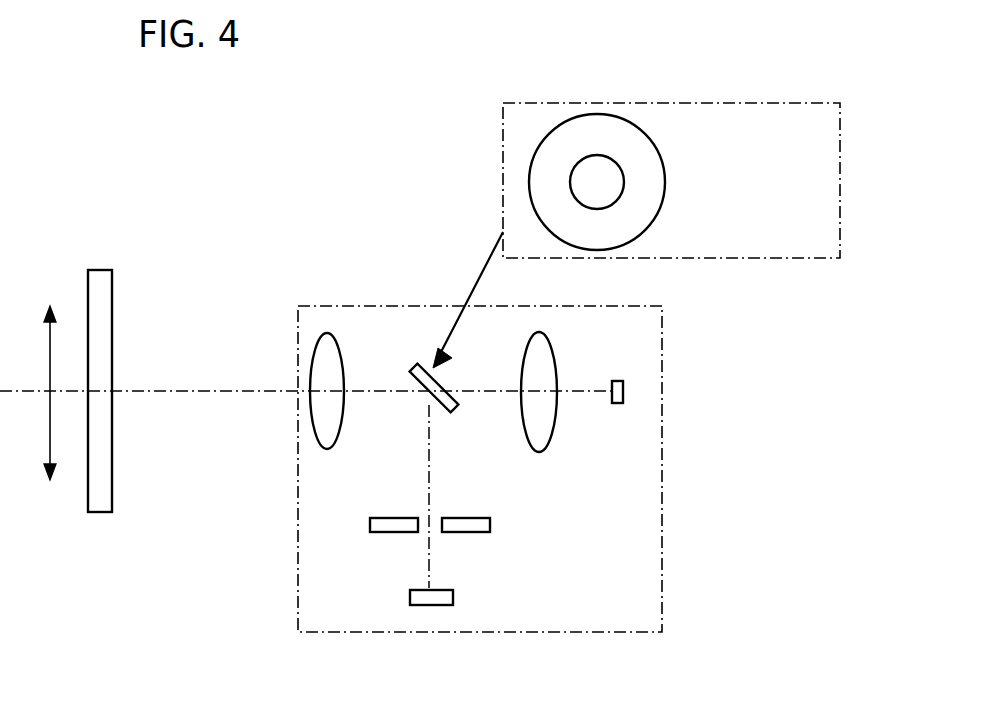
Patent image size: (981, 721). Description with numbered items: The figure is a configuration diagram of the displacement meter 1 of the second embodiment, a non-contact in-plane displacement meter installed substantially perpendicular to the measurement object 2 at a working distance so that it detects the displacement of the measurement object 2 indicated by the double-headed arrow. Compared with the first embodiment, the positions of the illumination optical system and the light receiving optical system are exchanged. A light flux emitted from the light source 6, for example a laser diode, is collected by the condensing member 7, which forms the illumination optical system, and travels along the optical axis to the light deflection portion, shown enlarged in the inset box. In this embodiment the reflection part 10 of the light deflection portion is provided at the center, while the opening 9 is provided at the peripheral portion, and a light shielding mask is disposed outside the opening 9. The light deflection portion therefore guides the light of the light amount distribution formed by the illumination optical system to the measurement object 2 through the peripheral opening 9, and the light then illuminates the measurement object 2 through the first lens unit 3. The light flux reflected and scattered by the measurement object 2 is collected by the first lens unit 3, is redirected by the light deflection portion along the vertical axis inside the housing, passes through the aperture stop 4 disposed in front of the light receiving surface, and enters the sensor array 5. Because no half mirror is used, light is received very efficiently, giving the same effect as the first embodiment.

The displacement meter 1 is at (662, 405).
The measurement object 2 is at (88, 290).
The first lens unit 3 is at (333, 333).
The aperture stop 4 is at (490, 523).
The sensor array 5 is at (453, 596).
The light source 6 is at (617, 381).
The condensing member 7 is at (540, 333).
The opening 9 is at (638, 198).
The reflection part 10 is at (608, 177).